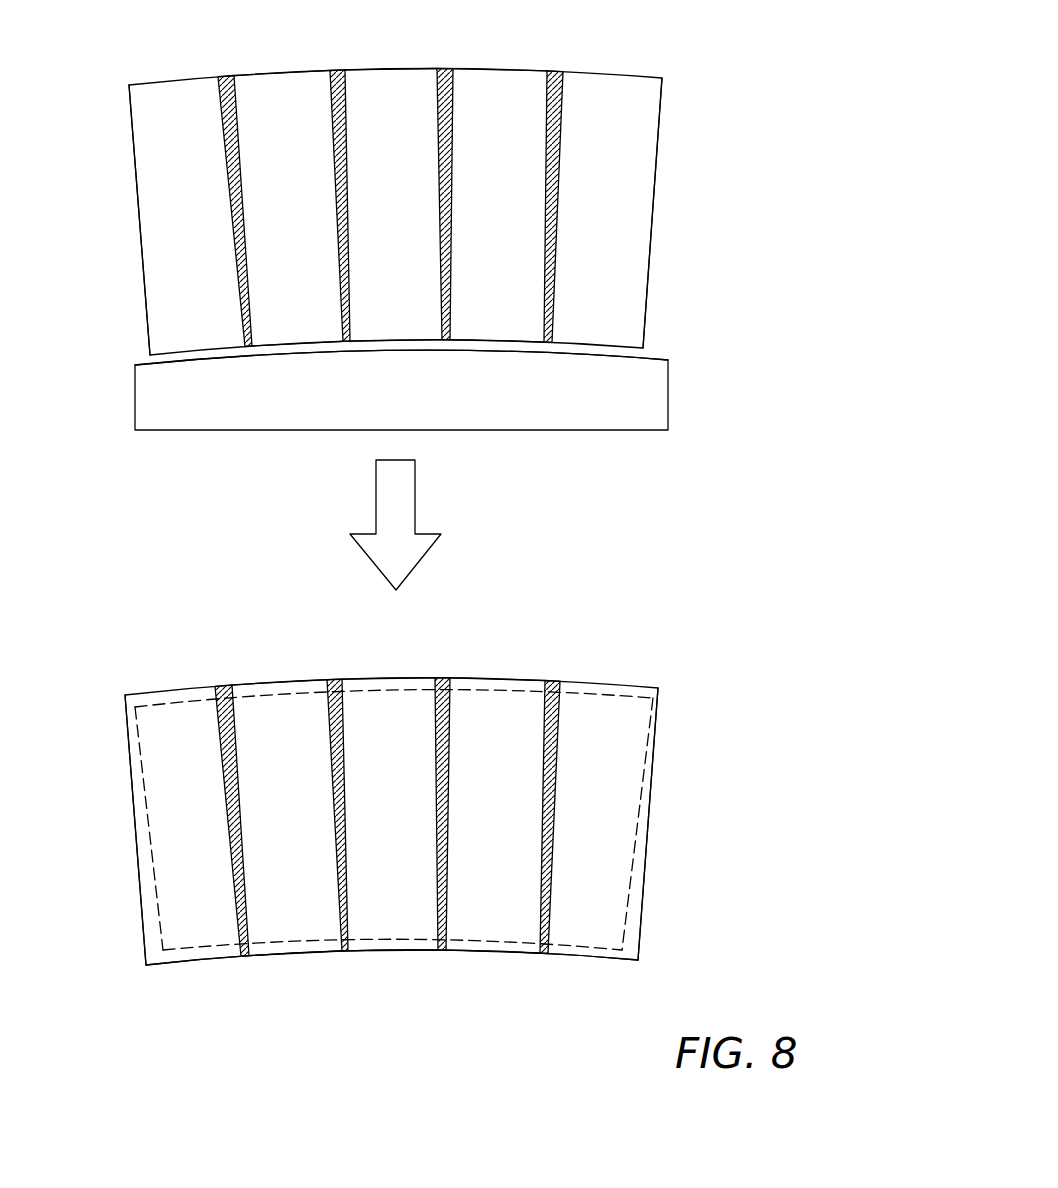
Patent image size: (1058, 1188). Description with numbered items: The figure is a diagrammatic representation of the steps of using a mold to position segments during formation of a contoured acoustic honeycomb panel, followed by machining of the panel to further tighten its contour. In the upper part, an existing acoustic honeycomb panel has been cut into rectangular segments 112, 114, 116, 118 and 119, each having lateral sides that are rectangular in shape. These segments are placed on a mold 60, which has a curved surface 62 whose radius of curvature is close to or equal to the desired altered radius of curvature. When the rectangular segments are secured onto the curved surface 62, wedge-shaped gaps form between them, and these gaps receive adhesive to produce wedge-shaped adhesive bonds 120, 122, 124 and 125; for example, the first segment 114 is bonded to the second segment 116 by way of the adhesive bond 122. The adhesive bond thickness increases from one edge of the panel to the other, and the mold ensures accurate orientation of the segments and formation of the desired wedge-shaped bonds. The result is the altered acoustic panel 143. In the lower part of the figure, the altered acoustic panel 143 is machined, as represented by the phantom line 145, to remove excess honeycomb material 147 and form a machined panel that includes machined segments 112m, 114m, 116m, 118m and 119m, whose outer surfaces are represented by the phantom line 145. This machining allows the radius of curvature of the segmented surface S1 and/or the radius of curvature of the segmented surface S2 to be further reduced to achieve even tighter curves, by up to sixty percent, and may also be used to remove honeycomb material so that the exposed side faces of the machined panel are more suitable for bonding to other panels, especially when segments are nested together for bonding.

The altered acoustic panel 143 is at (686, 218).
The wedge-shaped adhesive bond 125 is at (226, 76).
The wedge-shaped adhesive bond 120 is at (338, 70).
The adhesive bond 122 is at (447, 67).
The wedge-shaped adhesive bond 124 is at (560, 72).
The segment 112 is at (290, 90).
The first segment 114 is at (401, 78).
The second segment 116 is at (523, 82).
The segment 119 is at (158, 134).
The segment 118 is at (650, 123).
The mold 60 is at (401, 390).
The curved surface 62 is at (660, 358).
The segmented surface S2 is at (177, 703).
The segmented surface S1 is at (382, 940).
The machined segment 112m is at (275, 718).
The machined segment 114m is at (380, 727).
The machined segment 116m is at (490, 727).
The machined segment 119m is at (178, 762).
The machined segment 118m is at (608, 750).
The phantom line 145 is at (632, 858).
The excess honeycomb material 147 is at (632, 918).